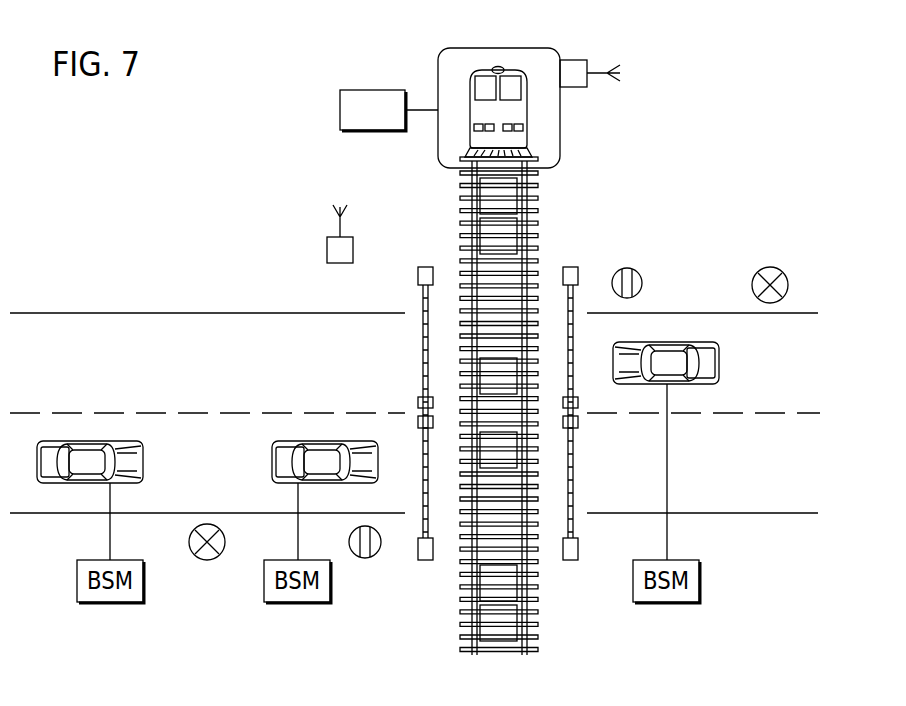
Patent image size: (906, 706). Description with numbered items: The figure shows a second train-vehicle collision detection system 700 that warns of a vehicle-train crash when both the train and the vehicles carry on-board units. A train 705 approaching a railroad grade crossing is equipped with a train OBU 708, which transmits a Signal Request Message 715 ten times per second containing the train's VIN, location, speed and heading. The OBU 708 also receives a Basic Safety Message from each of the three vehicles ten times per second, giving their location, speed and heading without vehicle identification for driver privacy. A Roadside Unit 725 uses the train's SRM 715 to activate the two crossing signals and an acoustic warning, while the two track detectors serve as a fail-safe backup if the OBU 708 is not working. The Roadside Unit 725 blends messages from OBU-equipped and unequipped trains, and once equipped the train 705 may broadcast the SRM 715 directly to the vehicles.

The second train-vehicle collision detection system 700 is at (696, 121).
The train 705 is at (468, 92).
The train OBU 708 is at (573, 60).
The Signal Request Message (SRM) 715 is at (338, 110).
The Roadside Unit (RSU) 725 is at (326, 252).